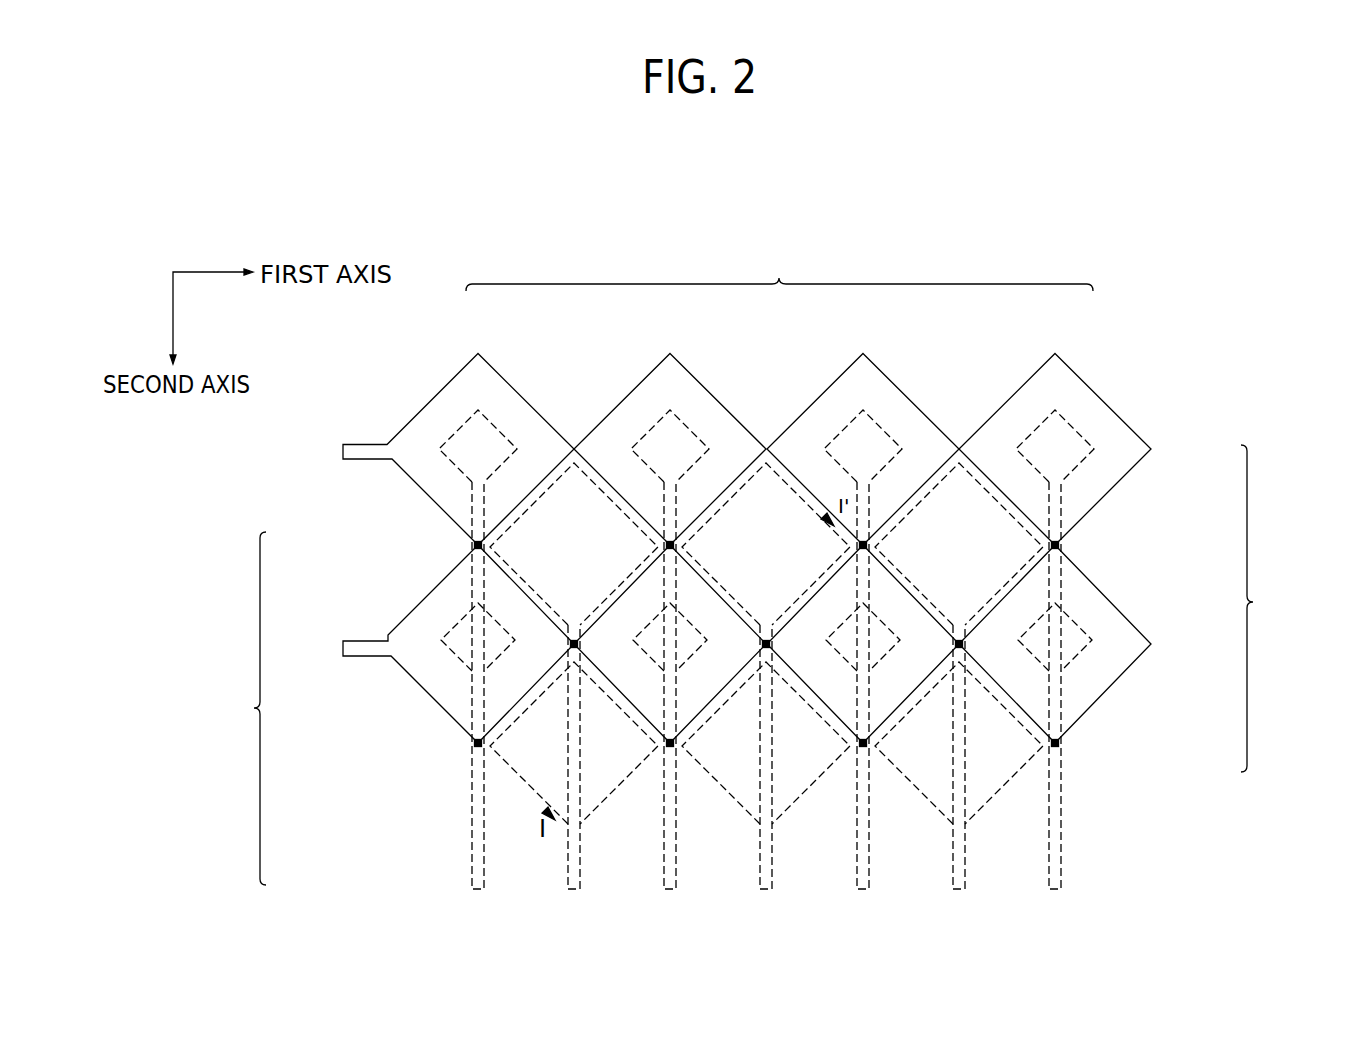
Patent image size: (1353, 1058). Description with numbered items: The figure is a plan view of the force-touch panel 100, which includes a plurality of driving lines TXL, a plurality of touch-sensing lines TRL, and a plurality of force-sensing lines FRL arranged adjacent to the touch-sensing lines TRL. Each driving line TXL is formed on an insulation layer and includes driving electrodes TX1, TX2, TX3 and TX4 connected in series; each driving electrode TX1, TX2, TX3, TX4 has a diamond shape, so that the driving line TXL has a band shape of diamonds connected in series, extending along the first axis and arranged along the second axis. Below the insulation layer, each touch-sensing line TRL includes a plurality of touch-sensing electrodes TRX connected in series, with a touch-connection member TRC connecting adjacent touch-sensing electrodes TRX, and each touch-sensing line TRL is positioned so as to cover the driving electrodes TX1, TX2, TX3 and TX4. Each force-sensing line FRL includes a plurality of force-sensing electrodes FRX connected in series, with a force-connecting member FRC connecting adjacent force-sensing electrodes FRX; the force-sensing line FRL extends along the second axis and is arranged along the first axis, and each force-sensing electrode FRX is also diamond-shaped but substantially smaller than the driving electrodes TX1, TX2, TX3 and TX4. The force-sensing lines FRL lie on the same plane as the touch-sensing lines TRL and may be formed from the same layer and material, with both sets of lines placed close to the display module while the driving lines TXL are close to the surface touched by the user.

The force-touch panel 100 is at (763, 186).
The driving electrode TX1 is at (491, 387).
The driving electrode TX2 is at (683, 387).
The driving electrode TX3 is at (876, 387).
The driving electrode TX4 is at (1068, 387).
The driving line TXL is at (779, 270).
The touch-sensing electrode TRX is at (510, 549).
The touch-connection member TRC is at (573, 648).
The touch-sensing line TRL is at (237, 708).
The force-sensing electrode FRX is at (1066, 462).
The force-connecting member FRC is at (1055, 544).
The force-sensing line FRL is at (1269, 608).